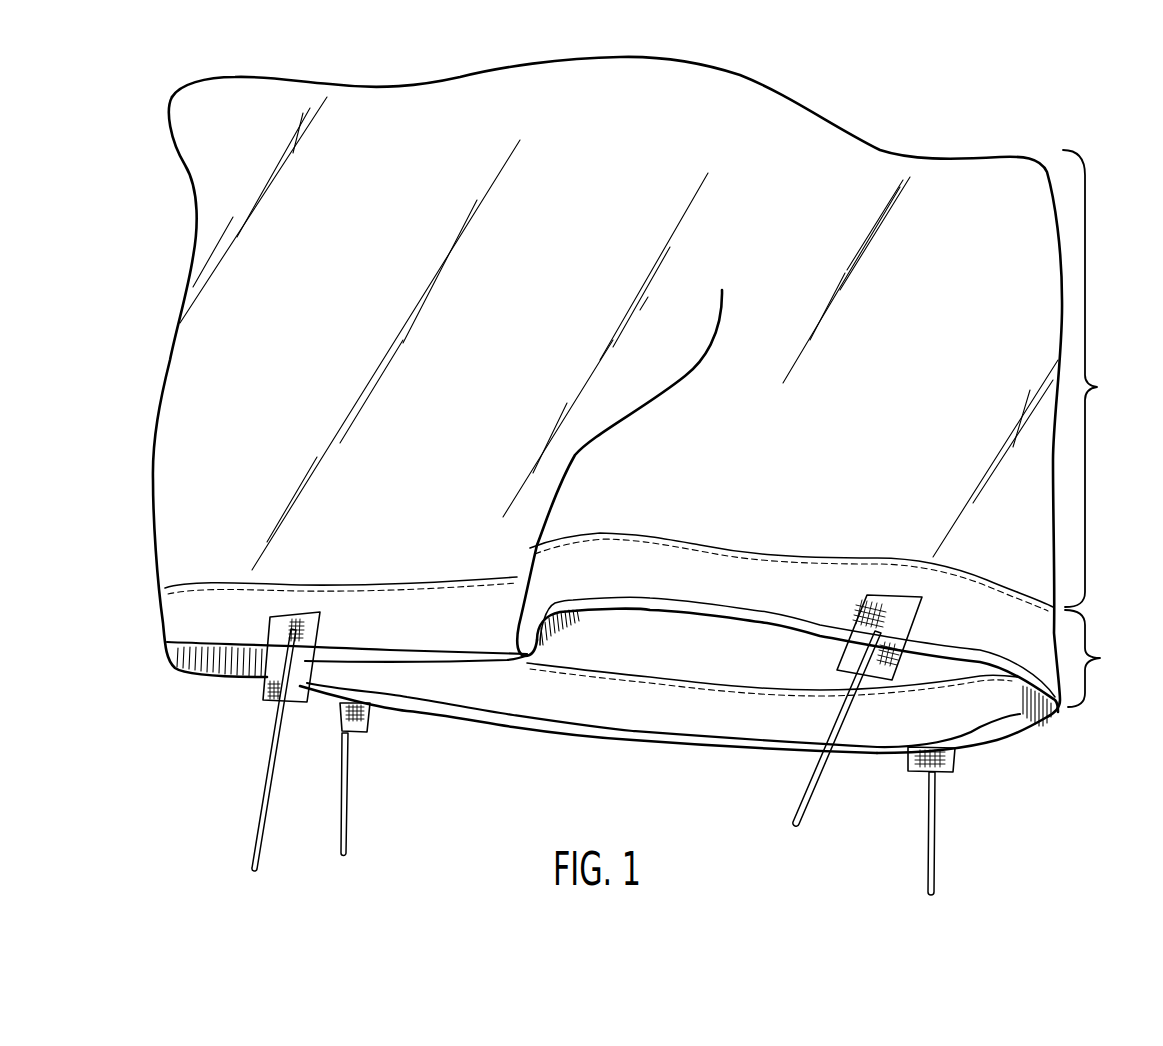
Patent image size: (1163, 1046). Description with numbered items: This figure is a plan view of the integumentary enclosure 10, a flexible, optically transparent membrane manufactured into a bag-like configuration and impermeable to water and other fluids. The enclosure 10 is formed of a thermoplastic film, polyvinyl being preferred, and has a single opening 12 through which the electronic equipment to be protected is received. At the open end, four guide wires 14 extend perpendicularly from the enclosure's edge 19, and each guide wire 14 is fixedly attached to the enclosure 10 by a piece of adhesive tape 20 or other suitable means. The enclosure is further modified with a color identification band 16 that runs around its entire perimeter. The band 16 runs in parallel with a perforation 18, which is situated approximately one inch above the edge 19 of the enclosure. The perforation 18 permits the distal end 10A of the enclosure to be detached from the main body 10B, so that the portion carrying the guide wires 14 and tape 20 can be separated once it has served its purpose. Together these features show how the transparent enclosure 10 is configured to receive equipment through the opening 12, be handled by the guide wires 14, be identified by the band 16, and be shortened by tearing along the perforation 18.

The integumentary enclosure 10 is at (919, 122).
The distal end 10A is at (1106, 658).
The main body 10B is at (1106, 378).
The opening 12 is at (679, 653).
The guide wires 14 is at (343, 801).
The color identification band 16 is at (686, 542).
The perforation 18 is at (754, 560).
The edge 19 is at (627, 614).
The adhesive tape 20 is at (261, 697).